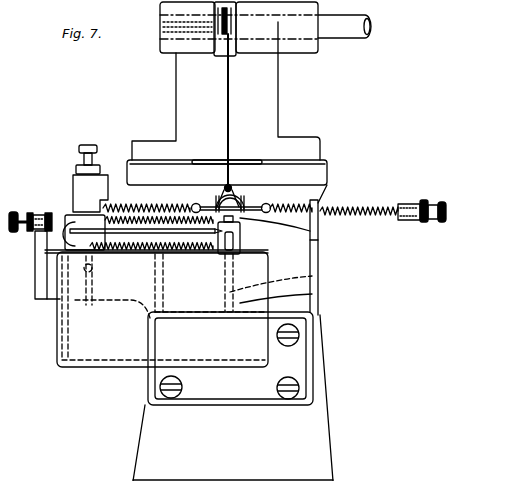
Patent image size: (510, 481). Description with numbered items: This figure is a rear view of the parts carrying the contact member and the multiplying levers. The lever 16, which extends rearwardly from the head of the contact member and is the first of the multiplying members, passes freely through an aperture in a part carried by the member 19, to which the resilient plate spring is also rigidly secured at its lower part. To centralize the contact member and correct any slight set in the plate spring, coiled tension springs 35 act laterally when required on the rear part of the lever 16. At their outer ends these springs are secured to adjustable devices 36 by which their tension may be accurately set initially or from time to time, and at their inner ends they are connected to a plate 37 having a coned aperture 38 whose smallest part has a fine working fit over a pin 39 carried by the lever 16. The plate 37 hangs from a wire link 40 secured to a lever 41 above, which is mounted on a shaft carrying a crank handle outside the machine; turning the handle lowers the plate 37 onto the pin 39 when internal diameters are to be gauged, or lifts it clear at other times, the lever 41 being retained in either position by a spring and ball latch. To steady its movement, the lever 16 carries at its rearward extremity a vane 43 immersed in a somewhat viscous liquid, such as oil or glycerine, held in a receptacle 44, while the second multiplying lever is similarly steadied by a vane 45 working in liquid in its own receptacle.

The lever 16 is at (241, 253).
The member 19 is at (318, 372).
The coiled tension springs 35 is at (115, 160).
The adjustable devices 36 is at (29, 212).
The plate 37 is at (255, 200).
The coned aperture 38 is at (246, 196).
The pin 39 is at (318, 232).
The wire link 40 is at (230, 80).
The lever 41 is at (210, 46).
The vane 43 is at (312, 277).
The receptacle 44 is at (312, 296).
The vane 45 is at (88, 325).